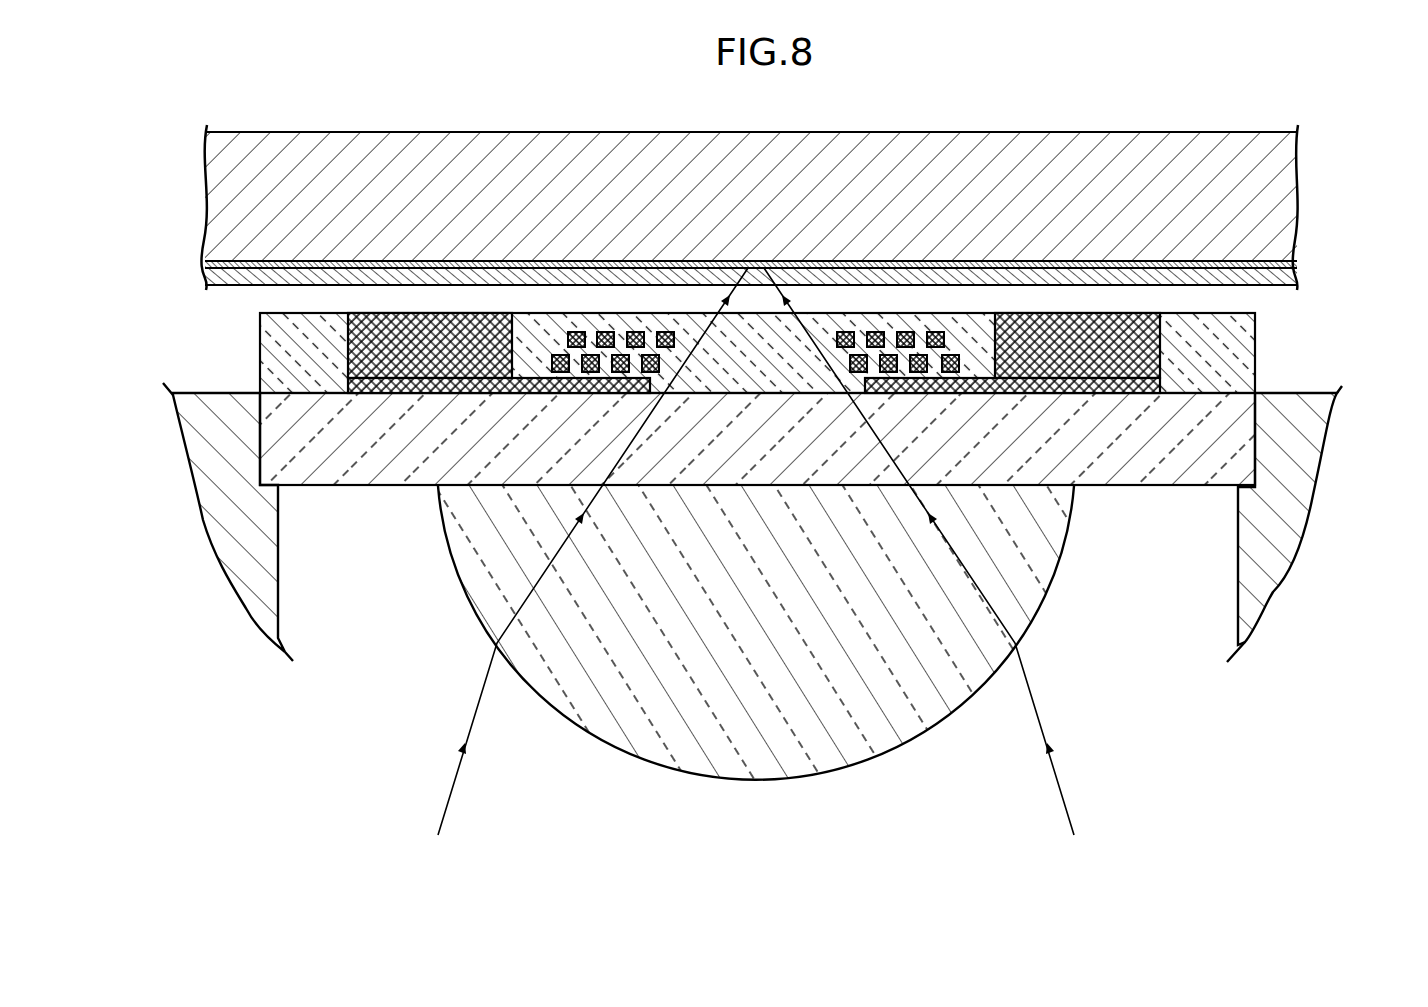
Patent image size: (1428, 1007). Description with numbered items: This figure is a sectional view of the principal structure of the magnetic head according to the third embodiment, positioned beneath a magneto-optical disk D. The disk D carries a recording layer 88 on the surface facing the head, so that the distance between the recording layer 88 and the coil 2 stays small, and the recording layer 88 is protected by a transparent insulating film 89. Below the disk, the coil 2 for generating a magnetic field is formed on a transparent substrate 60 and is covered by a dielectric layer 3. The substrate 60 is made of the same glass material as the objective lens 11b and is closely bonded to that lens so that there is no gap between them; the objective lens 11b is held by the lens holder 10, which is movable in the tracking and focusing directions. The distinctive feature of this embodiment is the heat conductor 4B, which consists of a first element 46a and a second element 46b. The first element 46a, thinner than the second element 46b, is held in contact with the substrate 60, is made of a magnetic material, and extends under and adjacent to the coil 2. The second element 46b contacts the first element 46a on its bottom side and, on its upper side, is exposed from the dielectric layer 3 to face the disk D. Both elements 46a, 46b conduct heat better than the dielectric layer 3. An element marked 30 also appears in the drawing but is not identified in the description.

The magneto-optical disk D is at (1249, 129).
The recording layer 88 is at (1302, 265).
The transparent insulating film 89 is at (1303, 279).
The heat conductor 4B is at (389, 310).
The second element 46b is at (365, 354).
The first element 46a is at (390, 389).
The coil 2 is at (959, 334).
The optical element 30 is at (851, 313).
The dielectric layer 3 is at (1238, 368).
The transparent substrate 60 is at (1145, 467).
The lens holder 10 is at (1252, 577).
The objective lens 11b is at (1034, 617).